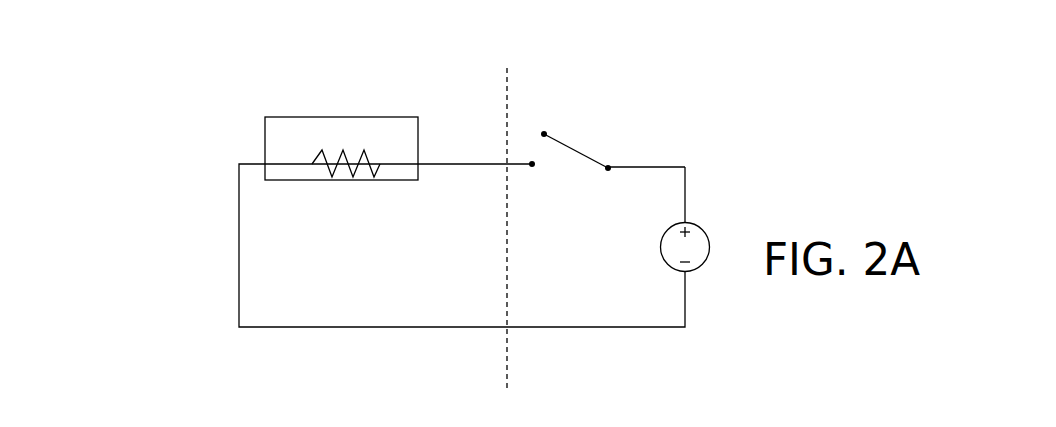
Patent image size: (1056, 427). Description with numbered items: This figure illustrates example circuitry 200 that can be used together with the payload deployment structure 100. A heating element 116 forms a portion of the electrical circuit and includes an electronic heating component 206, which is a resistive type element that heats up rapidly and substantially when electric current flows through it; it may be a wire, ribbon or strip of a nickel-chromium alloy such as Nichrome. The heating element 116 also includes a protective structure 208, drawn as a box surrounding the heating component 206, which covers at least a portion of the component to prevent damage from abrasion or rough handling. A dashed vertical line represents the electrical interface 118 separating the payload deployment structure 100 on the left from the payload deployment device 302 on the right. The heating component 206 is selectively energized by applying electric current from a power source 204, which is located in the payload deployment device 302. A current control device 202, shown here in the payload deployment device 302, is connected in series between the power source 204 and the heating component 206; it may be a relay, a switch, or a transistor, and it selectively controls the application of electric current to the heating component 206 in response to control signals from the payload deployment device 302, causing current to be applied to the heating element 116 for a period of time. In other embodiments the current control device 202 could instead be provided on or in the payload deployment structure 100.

The electrical circuit 200 is at (208, 136).
The heating element 116 is at (397, 81).
The protective structure 208 is at (347, 116).
The electronic heating component 206 is at (360, 162).
The electrical interface 118 is at (531, 73).
The current control device 202 is at (599, 136).
The power source 204 is at (711, 219).
The payload deployment structure 100 is at (322, 418).
The payload deployment device 302 is at (630, 413).